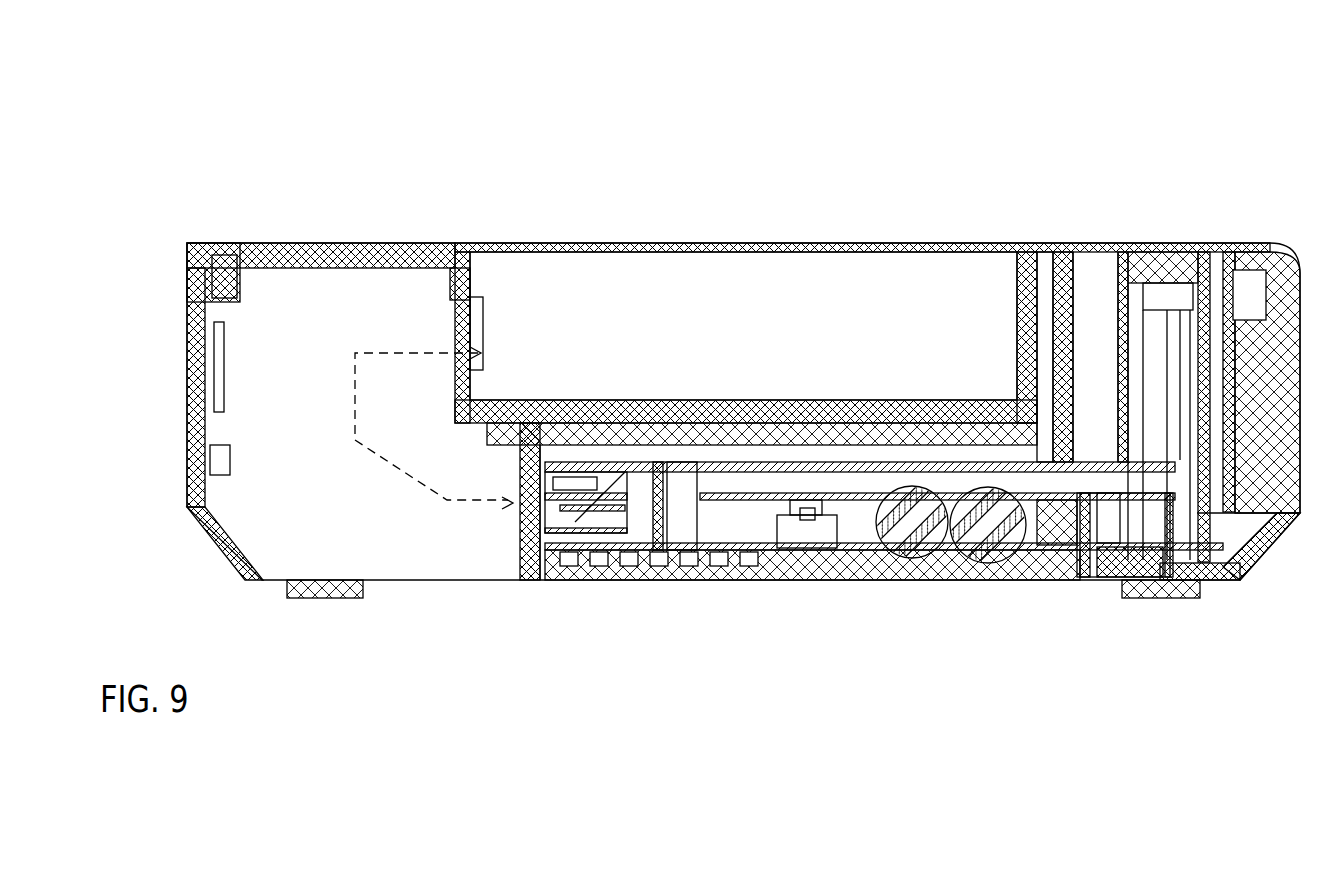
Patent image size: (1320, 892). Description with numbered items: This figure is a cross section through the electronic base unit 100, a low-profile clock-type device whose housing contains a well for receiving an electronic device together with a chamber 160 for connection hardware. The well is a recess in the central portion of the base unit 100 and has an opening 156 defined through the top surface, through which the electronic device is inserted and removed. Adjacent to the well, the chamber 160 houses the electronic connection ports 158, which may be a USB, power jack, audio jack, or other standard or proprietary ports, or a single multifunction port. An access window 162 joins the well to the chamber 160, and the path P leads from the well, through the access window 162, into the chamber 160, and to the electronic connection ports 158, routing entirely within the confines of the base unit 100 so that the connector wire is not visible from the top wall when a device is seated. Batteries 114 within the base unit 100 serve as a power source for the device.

The electronic base unit 100 is at (1153, 170).
The batteries 114 is at (900, 527).
The opening 156 is at (655, 277).
The electronic connection ports 158 is at (523, 513).
The chamber 160 is at (302, 296).
The access window 162 is at (488, 314).
The path P is at (413, 483).